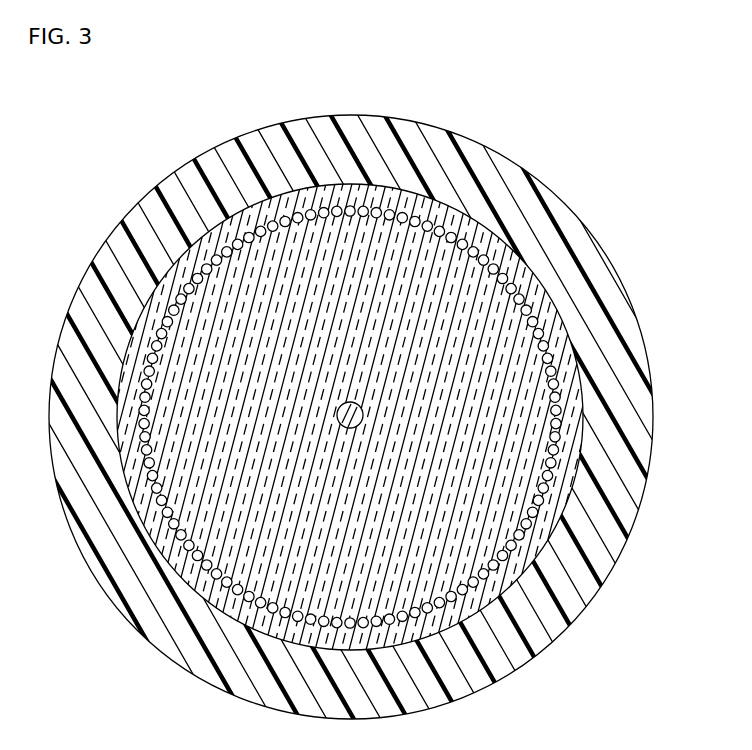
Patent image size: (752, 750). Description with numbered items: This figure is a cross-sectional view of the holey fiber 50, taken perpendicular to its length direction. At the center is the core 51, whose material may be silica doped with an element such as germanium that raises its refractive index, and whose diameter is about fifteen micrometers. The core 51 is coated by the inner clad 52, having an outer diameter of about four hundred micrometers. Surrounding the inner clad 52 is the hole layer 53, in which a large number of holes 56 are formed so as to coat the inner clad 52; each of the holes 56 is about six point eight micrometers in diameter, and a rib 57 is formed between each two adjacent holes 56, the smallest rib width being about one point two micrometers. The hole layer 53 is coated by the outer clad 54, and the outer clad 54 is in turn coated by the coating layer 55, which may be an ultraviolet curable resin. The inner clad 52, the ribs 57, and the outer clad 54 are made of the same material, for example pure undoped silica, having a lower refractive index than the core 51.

The holey fiber 50 is at (619, 136).
The core 51 is at (363, 413).
The inner clad 52 is at (405, 305).
The hole layer 53 is at (450, 218).
The outer clad 54 is at (555, 320).
The coating layer 55 is at (637, 387).
The holes 56 is at (405, 213).
The rib 57 is at (432, 212).